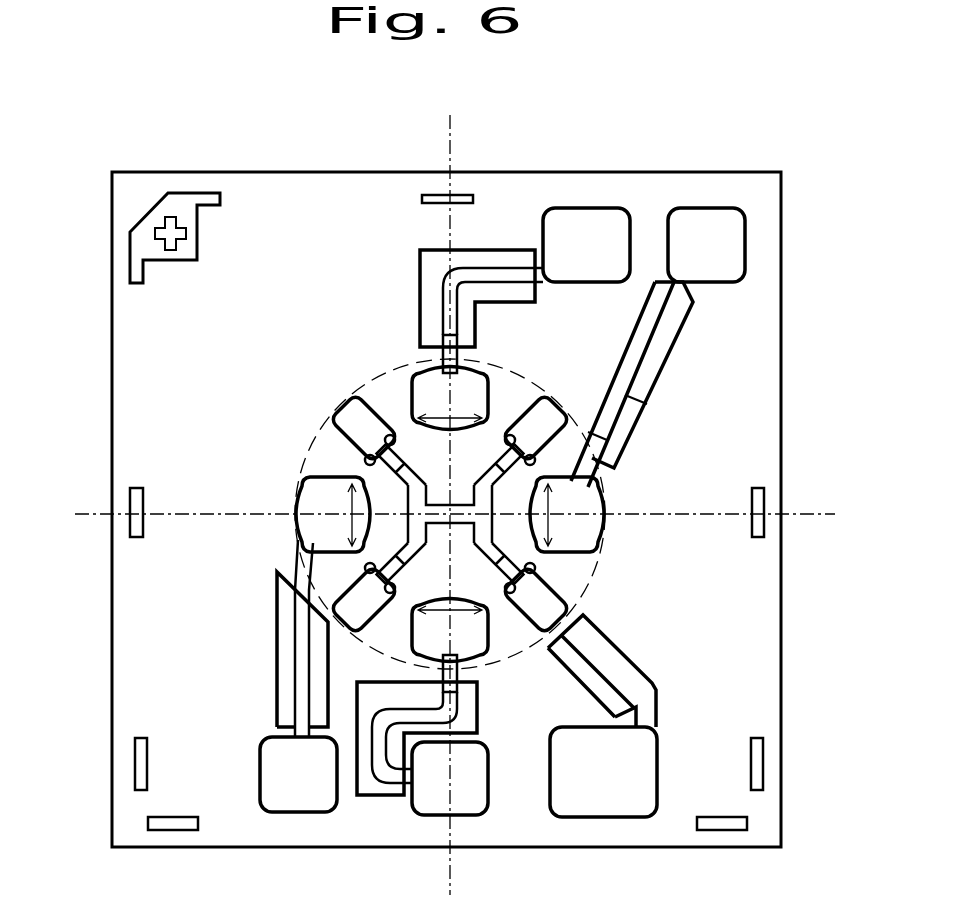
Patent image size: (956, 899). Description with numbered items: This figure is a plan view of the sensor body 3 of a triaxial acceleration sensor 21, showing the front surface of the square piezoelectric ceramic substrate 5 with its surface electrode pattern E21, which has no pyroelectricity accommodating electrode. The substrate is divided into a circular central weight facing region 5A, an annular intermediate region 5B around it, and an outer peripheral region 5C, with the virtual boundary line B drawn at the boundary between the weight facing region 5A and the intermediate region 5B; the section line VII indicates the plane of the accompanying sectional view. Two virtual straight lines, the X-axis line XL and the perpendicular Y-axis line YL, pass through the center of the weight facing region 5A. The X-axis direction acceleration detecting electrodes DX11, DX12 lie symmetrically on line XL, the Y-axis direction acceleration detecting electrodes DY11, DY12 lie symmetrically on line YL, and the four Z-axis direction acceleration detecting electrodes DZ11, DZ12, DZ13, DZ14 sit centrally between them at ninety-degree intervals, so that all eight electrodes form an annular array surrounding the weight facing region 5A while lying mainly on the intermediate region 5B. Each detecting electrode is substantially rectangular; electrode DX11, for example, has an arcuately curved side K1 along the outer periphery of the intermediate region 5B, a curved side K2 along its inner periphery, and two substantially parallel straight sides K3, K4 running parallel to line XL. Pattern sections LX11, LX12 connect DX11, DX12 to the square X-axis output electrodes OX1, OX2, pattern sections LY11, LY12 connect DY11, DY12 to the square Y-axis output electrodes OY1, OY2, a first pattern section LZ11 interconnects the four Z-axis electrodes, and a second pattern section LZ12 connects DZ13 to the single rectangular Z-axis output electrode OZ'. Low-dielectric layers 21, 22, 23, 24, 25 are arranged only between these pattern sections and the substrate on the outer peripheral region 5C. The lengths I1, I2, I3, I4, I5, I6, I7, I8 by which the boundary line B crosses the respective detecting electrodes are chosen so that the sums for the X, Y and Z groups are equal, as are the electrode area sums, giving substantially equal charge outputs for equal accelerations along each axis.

The sensor body 3 is at (97, 361).
The piezoelectric ceramic substrate 5 is at (776, 392).
The weight facing region 5A is at (312, 562).
The intermediate region 5B is at (300, 470).
The outer peripheral region 5C is at (752, 618).
The triaxial acceleration sensor / low-dielectric layer 21 is at (432, 258).
The low-dielectric layer 22 is at (366, 778).
The low-dielectric layer 23 is at (283, 710).
The low-dielectric layer 24 is at (688, 334).
The low-dielectric layer 25 is at (635, 684).
The virtual boundary line B is at (330, 440).
The surface electrode pattern E21 is at (277, 463).
The virtual X-axis straight line XL is at (442, 484).
The virtual Y-axis straight line YL is at (473, 517).
The section line VII- VII is at (75, 506).
The arcuately curved side K1 is at (443, 305).
The curved side K2 is at (437, 425).
The straight side K3 is at (410, 388).
The straight side K4 is at (492, 400).
The length I1 is at (438, 378).
The length I2 is at (442, 620).
The length I3 is at (330, 500).
The length I4 is at (560, 502).
The length I5 is at (358, 412).
The length I6 is at (360, 583).
The length I7 is at (522, 585).
The length I8 is at (528, 410).
The X-axis acceleration output electrode OX1 is at (567, 238).
The X-axis acceleration output electrode OX2 is at (457, 800).
The Y-axis acceleration output electrode OY1 is at (283, 795).
The Y-axis acceleration output electrode OY2 is at (700, 238).
The Z-axis acceleration output electrode OZ' is at (603, 811).
The pattern section LX11 is at (460, 262).
The pattern section LX12 is at (398, 790).
The pattern section LY11 is at (296, 648).
The pattern section LY12 is at (640, 400).
The first pattern section LZ11 is at (438, 512).
The second pattern section LZ12 is at (603, 668).
The X-axis direction acceleration detecting electrode DX11 is at (475, 346).
The X-axis direction acceleration detecting electrode DX12 is at (474, 660).
The Y-axis direction acceleration detecting electrode DY11 is at (307, 527).
The Y-axis direction acceleration detecting electrode DY12 is at (600, 495).
The Z-axis direction acceleration detecting electrode DZ11 is at (353, 402).
The Z-axis direction acceleration detecting electrode DZ12 is at (350, 612).
The Z-axis direction acceleration detecting electrode DZ13 is at (548, 600).
The Z-axis direction acceleration detecting electrode DZ14 is at (545, 400).